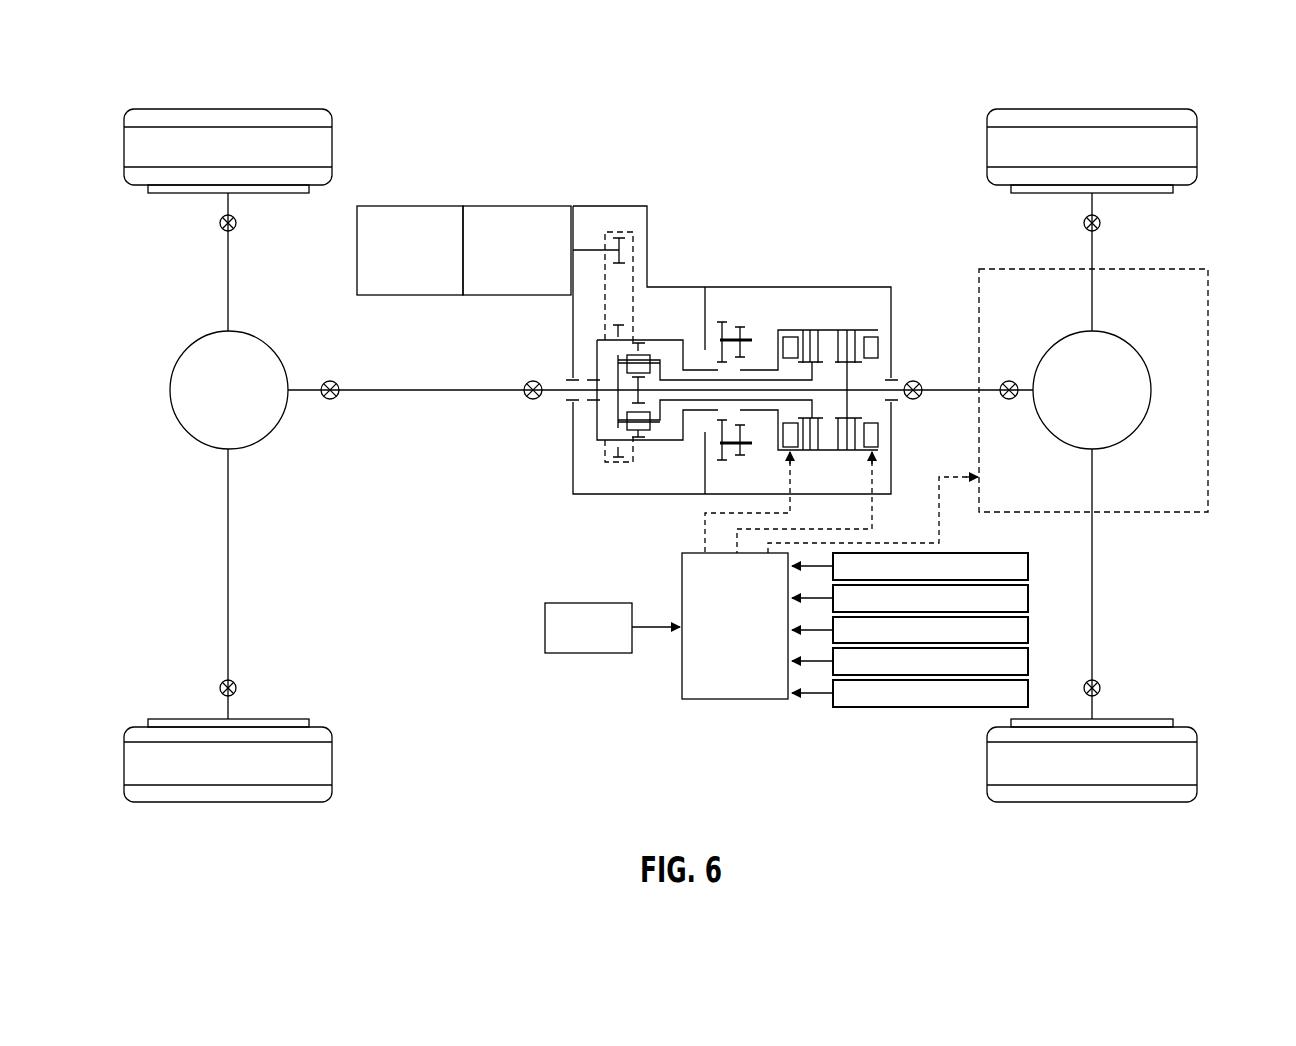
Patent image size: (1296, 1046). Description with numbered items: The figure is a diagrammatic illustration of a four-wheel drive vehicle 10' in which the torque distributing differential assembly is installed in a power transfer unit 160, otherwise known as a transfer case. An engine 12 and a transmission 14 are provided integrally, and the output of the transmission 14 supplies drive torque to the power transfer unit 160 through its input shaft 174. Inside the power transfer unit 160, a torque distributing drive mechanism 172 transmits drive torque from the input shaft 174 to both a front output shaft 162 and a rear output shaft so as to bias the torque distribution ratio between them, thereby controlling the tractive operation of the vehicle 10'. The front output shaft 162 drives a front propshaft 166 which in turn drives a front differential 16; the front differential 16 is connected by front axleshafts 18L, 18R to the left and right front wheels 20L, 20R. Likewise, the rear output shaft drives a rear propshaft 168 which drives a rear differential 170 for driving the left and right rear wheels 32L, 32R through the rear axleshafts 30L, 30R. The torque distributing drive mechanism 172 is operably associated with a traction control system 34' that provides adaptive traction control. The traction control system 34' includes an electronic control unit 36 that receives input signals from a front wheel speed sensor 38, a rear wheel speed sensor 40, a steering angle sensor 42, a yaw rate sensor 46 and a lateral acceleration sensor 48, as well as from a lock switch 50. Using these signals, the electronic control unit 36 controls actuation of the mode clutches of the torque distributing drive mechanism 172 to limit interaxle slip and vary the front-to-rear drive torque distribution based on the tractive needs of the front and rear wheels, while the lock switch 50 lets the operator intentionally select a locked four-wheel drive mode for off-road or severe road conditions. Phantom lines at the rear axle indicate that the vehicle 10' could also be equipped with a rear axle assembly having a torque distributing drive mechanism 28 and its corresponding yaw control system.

The four-wheel drive vehicle 10' is at (427, 491).
The engine 12 is at (432, 216).
The transmission 14 is at (523, 216).
The front differential 16 is at (188, 384).
The front axleshaft 18R is at (230, 256).
The front axleshaft 18L is at (230, 571).
The front wheel 20R is at (318, 148).
The front wheel 20L is at (316, 765).
The torque distributing drive mechanism 28 is at (1212, 266).
The axleshaft 30R is at (1090, 252).
The axleshaft 30L is at (1094, 608).
The rear wheel 32R is at (1182, 148).
The rear wheel 32L is at (1182, 765).
The traction control system 34' is at (813, 652).
The electronic control unit 36 is at (705, 692).
The front wheel speed sensor 38 is at (1030, 566).
The rear wheel speed sensor 40 is at (1030, 598).
The steering angle sensor 42 is at (1030, 630).
The yaw rate sensor 46 is at (1030, 661).
The lateral acceleration sensor 48 is at (1030, 693).
The lock switch 50 is at (552, 606).
The power transfer unit 160 is at (764, 268).
The front output shaft 162 is at (548, 388).
The front propshaft 166 is at (410, 388).
The rear propshaft 168 is at (940, 396).
The rear differential 170 is at (1138, 400).
The torque distributing drive mechanism 172 is at (834, 304).
The input shaft 174 is at (586, 250).